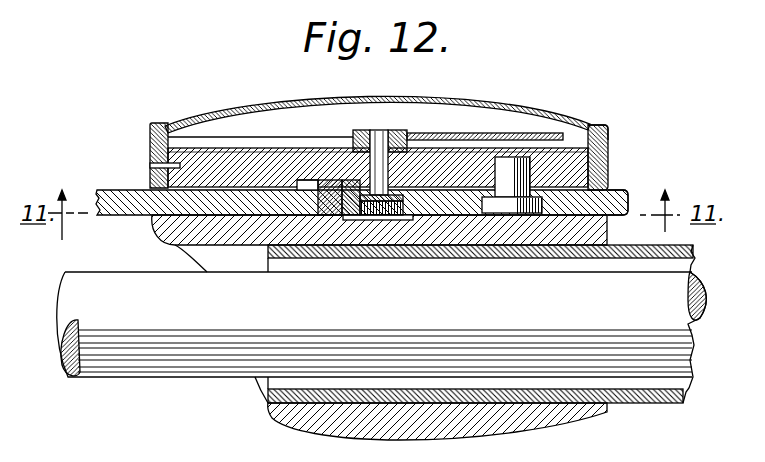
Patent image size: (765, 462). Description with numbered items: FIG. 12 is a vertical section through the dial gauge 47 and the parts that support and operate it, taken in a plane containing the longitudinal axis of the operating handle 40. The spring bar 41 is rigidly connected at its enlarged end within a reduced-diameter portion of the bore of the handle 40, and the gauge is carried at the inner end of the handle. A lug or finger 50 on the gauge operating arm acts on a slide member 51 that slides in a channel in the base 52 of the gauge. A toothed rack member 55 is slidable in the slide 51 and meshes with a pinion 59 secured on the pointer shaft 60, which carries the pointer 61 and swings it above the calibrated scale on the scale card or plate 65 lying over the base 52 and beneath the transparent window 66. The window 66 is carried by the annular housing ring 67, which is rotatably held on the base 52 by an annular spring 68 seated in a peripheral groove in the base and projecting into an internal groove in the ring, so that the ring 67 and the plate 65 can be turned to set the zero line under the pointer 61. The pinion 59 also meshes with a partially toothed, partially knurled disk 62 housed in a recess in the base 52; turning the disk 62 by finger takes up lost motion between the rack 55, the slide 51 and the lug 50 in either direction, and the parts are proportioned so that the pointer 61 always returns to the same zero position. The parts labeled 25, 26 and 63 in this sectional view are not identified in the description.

The mounting plate 25 is at (118, 191).
The body / saddle 26 is at (164, 224).
The operating handle 40 is at (694, 250).
The spring bar 41 is at (660, 302).
The dial gauge 47 is at (150, 124).
The lug or finger 50 is at (322, 195).
The slide member 51 is at (333, 178).
The base 52 is at (598, 166).
The toothed rack member 55 is at (352, 216).
The pinion 59 is at (385, 205).
The pointer shaft 60 is at (376, 133).
The pointer 61 is at (470, 133).
The partially toothed and partially knurled disk 62 is at (614, 196).
The bore 63 is at (520, 214).
The scale card or plate 65 is at (548, 152).
The transparent closure or window 66 is at (247, 97).
The annular housing ring 67 is at (609, 133).
The annular spring 68 is at (152, 165).